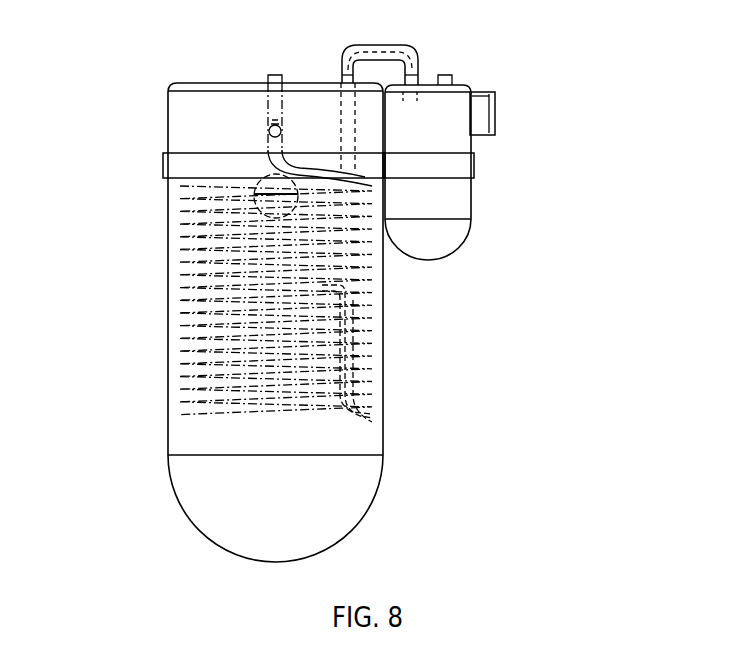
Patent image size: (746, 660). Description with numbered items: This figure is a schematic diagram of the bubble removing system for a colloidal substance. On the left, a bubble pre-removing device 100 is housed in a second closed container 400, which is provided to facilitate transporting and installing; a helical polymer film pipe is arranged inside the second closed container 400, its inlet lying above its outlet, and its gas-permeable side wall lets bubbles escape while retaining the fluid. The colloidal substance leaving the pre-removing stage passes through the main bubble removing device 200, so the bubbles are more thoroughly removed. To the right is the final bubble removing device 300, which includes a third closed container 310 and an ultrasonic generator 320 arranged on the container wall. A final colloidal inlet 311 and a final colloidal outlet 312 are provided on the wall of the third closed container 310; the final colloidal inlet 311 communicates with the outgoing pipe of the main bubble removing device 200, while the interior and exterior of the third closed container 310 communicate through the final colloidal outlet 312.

The bubble pre-removing device 100 is at (182, 195).
The main bubble removing device 200 is at (262, 190).
The final bubble removing device 300 is at (497, 149).
The third closed container 310 is at (457, 197).
The final colloidal inlet 311 is at (408, 78).
The final colloidal outlet 312 is at (445, 80).
The ultrasonic generator 320 is at (480, 110).
The second closed container 400 is at (190, 435).